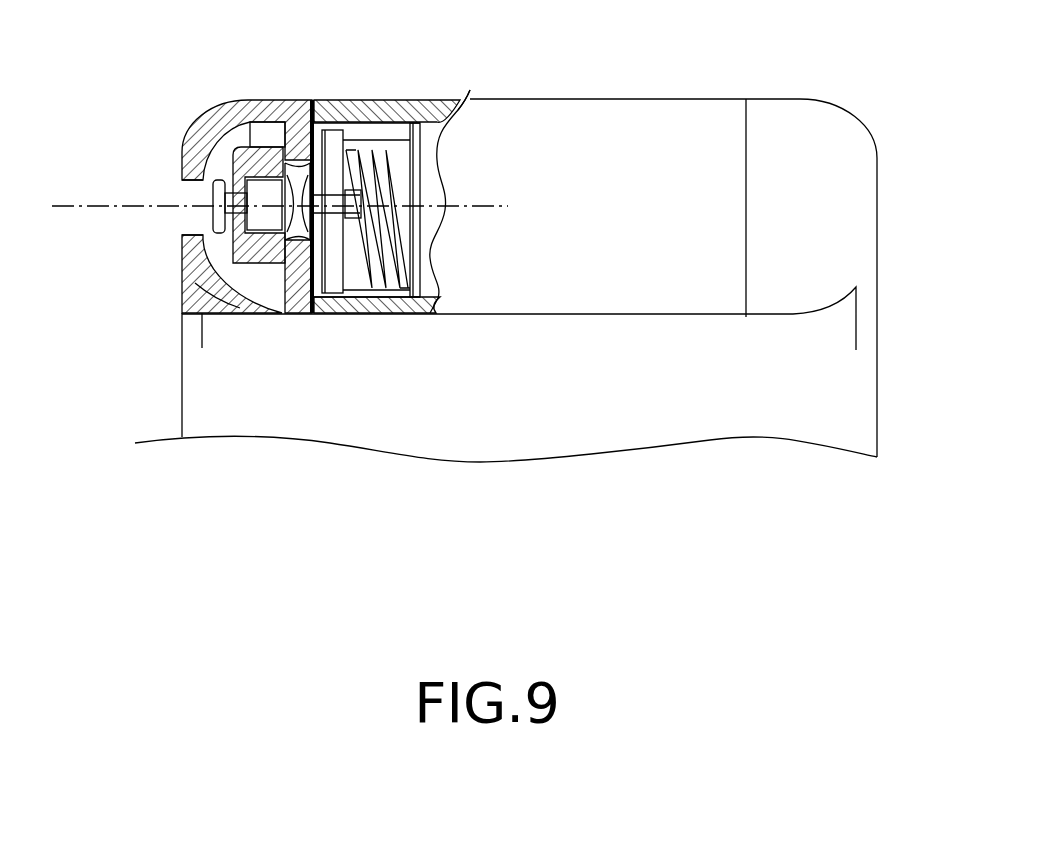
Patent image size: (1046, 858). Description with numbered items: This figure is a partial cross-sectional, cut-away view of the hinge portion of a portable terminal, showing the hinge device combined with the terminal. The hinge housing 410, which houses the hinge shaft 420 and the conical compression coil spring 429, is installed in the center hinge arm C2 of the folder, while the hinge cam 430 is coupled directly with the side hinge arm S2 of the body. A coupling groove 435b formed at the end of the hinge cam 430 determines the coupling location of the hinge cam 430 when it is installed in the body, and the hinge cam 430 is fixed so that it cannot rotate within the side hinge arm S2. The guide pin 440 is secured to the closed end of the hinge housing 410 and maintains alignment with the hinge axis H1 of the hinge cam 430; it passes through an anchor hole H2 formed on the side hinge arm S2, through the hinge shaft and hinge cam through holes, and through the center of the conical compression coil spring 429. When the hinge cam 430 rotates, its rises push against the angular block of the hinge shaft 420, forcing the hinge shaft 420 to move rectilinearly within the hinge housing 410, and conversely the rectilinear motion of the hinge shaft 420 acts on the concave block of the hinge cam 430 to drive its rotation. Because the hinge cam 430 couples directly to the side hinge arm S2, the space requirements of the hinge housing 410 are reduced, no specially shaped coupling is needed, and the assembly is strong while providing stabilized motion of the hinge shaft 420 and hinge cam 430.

The hinge housing 410 is at (410, 175).
The hinge shaft 420 is at (334, 145).
The conical compression coil spring 429 is at (400, 303).
The hinge cam 430 is at (262, 165).
The coupling groove 435b is at (265, 212).
The guide pin 440 is at (223, 180).
The center hinge arm C2 is at (457, 98).
The hinge axis H1 is at (81, 206).
The anchor hole H2 is at (232, 313).
The side hinge arm S2 is at (182, 268).